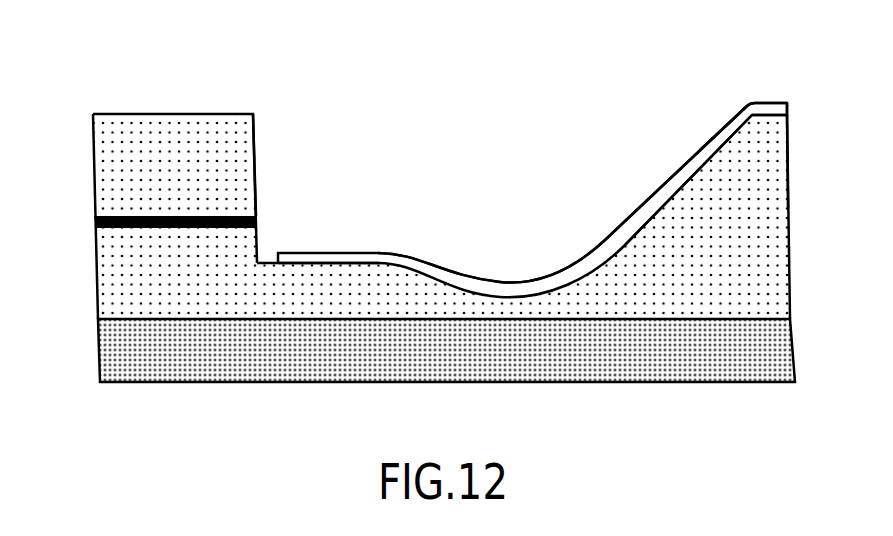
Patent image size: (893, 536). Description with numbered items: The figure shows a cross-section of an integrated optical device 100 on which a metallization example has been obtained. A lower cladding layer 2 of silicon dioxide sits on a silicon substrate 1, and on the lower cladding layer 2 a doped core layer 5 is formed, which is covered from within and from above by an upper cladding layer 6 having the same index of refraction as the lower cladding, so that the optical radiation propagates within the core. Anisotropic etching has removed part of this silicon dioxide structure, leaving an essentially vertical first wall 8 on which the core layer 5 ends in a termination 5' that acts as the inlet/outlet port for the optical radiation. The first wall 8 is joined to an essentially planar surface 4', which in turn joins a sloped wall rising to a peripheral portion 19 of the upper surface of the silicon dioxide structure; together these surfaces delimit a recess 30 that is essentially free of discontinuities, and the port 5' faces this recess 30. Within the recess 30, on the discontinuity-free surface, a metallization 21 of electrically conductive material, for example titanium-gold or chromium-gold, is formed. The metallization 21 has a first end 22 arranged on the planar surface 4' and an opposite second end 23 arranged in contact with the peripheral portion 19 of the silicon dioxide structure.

The integrated device 100 is at (445, 216).
The silicon substrate 1 is at (118, 355).
The lower cladding layer 2 is at (121, 278).
The planar surface 4' is at (328, 347).
The core layer 5 is at (154, 215).
The termination 5' is at (291, 173).
The upper cladding layer 6 is at (114, 161).
The first vertical wall 8 is at (257, 140).
The peripheral portion 19 is at (738, 121).
The metallization 21 is at (626, 227).
The first end 22 is at (311, 257).
The second end 23 is at (760, 124).
The recess 30 is at (456, 217).